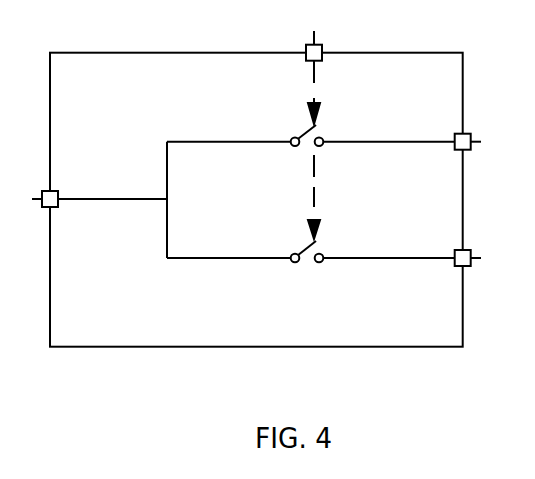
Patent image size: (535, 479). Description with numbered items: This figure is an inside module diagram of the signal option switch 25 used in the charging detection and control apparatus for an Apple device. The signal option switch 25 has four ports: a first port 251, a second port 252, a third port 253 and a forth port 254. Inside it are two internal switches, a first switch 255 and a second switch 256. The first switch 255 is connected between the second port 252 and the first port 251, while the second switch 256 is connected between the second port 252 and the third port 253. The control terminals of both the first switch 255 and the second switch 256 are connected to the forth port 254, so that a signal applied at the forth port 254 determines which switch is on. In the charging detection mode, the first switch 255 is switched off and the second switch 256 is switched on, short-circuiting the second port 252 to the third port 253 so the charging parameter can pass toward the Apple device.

The signal option switch 25 is at (256, 200).
The first port 251 is at (442, 161).
The second port 252 is at (99, 181).
The third port 253 is at (443, 279).
The forth port 254 is at (284, 135).
The first switch 255 is at (285, 153).
The second switch 256 is at (285, 270).